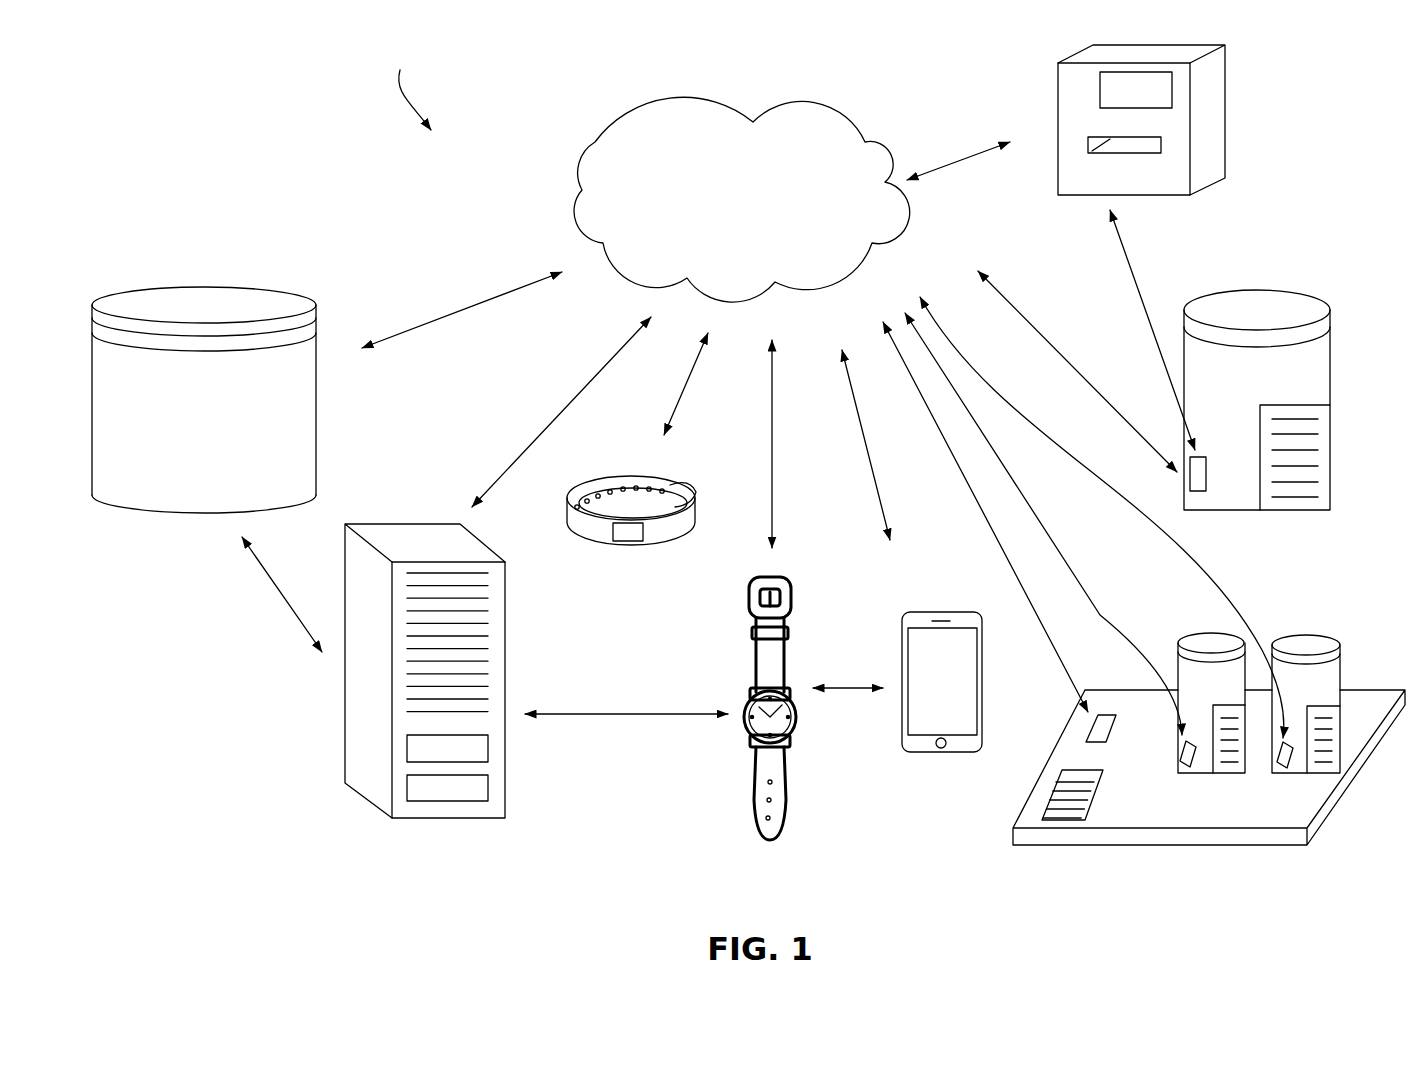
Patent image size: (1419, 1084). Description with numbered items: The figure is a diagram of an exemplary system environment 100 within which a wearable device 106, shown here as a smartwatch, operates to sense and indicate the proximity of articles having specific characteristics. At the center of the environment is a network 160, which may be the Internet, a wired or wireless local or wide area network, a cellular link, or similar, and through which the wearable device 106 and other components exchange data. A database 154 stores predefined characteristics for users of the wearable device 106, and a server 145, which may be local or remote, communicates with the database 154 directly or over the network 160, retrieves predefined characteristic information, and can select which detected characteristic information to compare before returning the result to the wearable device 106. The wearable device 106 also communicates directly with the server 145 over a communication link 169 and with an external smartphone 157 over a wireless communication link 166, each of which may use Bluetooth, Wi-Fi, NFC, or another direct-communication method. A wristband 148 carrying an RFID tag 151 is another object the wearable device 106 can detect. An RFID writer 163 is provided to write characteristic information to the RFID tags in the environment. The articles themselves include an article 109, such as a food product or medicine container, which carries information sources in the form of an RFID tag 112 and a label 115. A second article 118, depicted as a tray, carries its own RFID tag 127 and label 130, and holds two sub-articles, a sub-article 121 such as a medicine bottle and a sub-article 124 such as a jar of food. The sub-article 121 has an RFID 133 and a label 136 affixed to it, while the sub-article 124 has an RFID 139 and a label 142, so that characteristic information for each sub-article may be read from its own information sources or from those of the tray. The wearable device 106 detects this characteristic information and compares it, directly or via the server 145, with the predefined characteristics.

The system environment 100 is at (406, 85).
The network 160 is at (590, 150).
The database 154 is at (200, 287).
The server 145 is at (345, 722).
The wristband 148 is at (690, 500).
The RFID tag 151 is at (625, 541).
The wearable device 106 is at (788, 612).
The communication link 169 is at (625, 712).
The wireless communication link 166 is at (850, 686).
The smartphone 157 is at (940, 612).
The RFID writer 163 is at (1226, 145).
The article 109 is at (1330, 347).
The label 115 is at (1330, 480).
The RFID tag 112 is at (1197, 492).
The article 118 is at (1310, 840).
The sub-article 121 is at (1178, 650).
The sub-article 124 is at (1340, 656).
The RFID tag 127 is at (1108, 738).
The label 130 is at (1095, 797).
The RFID 133 is at (1183, 766).
The label 136 is at (1215, 765).
The RFID 139 is at (1278, 766).
The label 142 is at (1310, 765).